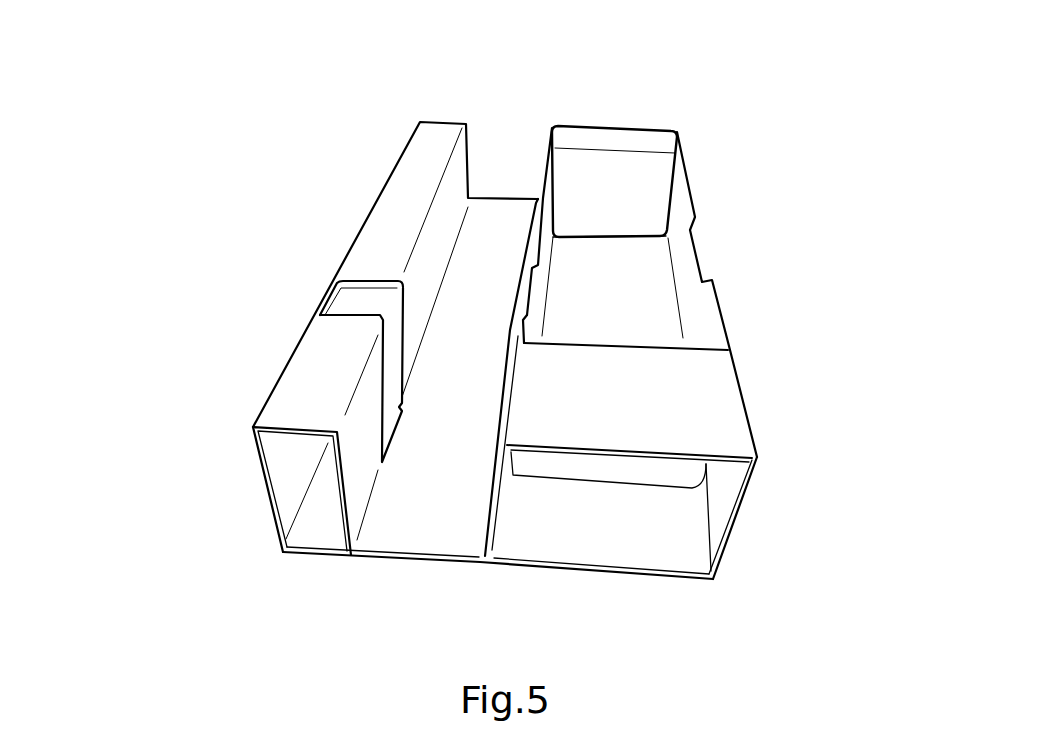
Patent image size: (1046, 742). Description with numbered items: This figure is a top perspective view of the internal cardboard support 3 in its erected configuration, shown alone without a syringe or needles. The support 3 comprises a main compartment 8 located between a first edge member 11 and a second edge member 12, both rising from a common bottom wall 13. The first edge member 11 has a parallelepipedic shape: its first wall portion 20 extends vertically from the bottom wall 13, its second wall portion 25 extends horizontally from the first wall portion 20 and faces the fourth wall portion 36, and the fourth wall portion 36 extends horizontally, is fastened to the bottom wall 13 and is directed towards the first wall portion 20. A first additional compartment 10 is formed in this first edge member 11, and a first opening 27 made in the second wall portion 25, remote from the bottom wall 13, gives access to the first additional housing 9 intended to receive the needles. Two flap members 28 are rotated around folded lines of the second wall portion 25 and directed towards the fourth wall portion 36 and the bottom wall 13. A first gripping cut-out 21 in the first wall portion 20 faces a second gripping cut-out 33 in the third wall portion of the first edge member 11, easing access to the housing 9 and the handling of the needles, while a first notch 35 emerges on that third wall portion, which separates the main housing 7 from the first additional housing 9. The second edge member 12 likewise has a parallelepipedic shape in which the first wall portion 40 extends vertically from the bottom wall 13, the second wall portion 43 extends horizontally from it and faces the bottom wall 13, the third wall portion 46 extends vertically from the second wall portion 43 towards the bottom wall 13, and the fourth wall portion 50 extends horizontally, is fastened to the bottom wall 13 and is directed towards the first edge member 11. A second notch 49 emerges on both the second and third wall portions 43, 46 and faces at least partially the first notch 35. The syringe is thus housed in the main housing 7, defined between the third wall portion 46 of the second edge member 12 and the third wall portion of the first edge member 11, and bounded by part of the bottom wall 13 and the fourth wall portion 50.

The internal cardboard support 3 is at (283, 113).
The main housing 7 is at (477, 242).
The main compartment 8 is at (503, 196).
The first additional housing 9 is at (657, 275).
The first additional compartment 10 is at (683, 322).
The first edge member 11 is at (782, 408).
The second edge member 12 is at (232, 375).
The bottom wall 13 is at (327, 516).
The first wall portion 20 is at (729, 503).
The first gripping cut-out 21 is at (701, 263).
The second wall portion 25 is at (651, 140).
The first opening 27 is at (579, 330).
The flap members 28 is at (650, 192).
The second gripping cut-out 33 is at (545, 252).
The first notch 35 is at (518, 316).
The fourth wall portion 36 is at (628, 302).
The first wall portion 40 is at (288, 453).
The second wall portion 43 is at (407, 190).
The third wall portion 46 is at (425, 281).
The second notch 49 is at (355, 293).
The fourth wall portion 50 is at (436, 513).